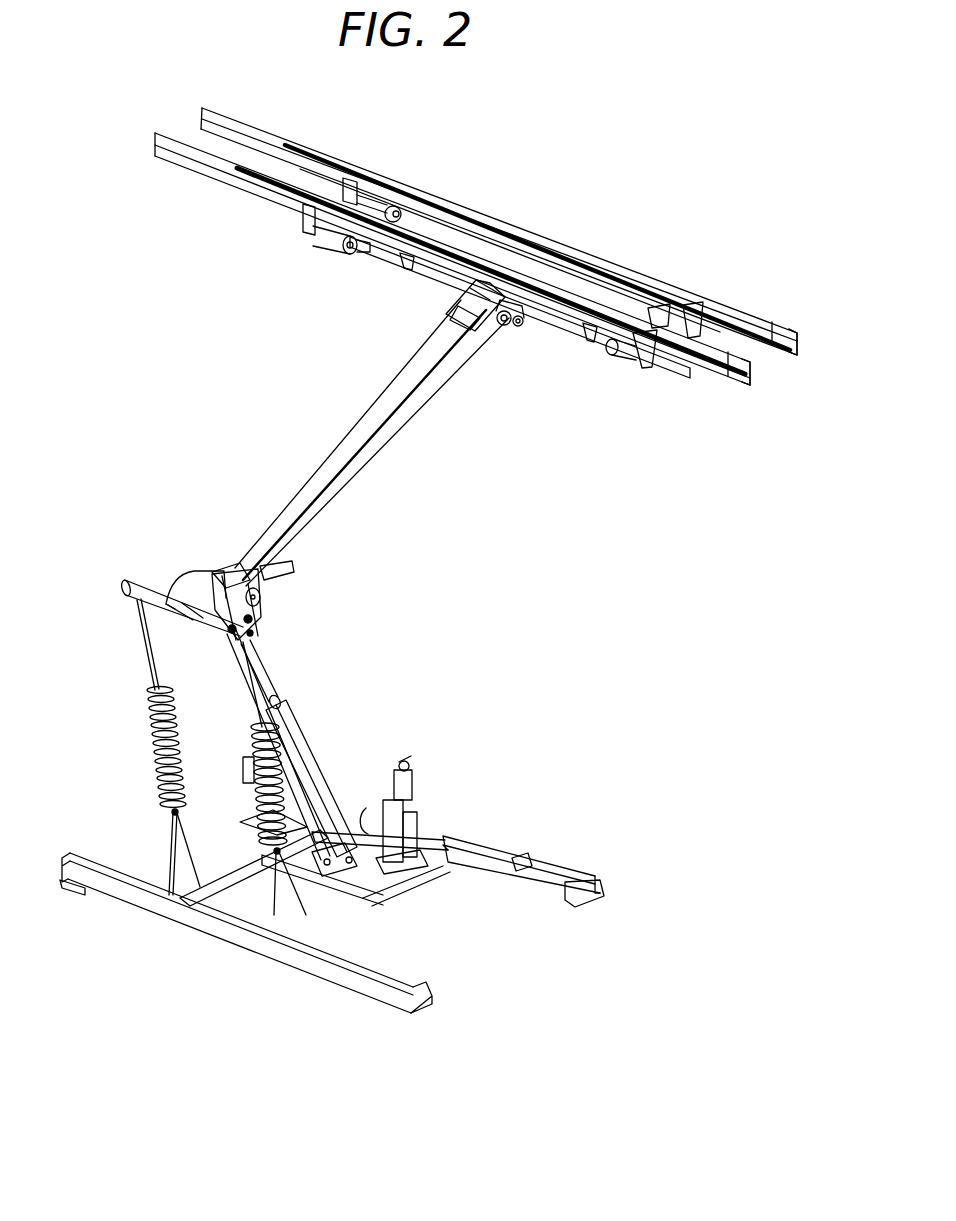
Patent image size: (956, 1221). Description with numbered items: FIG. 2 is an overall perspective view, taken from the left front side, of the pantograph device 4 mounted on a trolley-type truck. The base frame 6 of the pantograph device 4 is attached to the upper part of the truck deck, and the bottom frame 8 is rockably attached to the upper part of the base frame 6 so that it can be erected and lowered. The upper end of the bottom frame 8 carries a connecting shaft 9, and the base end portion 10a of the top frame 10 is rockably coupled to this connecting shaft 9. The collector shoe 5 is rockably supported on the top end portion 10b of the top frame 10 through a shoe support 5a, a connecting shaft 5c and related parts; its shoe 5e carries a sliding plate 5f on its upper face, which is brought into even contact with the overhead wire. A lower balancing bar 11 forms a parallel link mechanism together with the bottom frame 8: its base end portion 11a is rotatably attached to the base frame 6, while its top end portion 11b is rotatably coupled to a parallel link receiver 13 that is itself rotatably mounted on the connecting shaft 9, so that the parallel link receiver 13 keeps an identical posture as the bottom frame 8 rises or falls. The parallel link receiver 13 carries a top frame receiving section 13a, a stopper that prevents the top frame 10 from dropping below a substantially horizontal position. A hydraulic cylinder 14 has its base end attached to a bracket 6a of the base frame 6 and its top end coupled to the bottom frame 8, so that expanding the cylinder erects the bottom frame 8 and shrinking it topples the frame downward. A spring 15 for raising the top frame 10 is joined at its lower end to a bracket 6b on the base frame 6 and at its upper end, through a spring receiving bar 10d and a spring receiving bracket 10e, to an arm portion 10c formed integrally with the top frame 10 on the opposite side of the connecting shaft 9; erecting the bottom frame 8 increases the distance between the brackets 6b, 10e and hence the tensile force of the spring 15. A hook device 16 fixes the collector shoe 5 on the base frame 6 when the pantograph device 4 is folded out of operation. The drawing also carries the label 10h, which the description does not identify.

The pantograph device 4 is at (588, 549).
The collector shoe 5 is at (690, 364).
The shoe support 5a is at (330, 240).
The connecting shaft 5c is at (550, 312).
The shoe 5e is at (795, 353).
The sliding plate 5f is at (588, 258).
The base frame 6 is at (360, 980).
The bracket 6a is at (353, 873).
The bracket 6b is at (285, 893).
The bottom frame 8 is at (315, 731).
The connecting shaft 9 is at (258, 612).
The top frame 10 is at (363, 425).
The base end portion 10a is at (238, 572).
The top end portion 10b is at (463, 290).
The arm portion 10c is at (188, 578).
The spring receiving bar 10d is at (137, 591).
The spring receiving bracket 10e is at (128, 580).
The arm connecting eye 10h is at (508, 328).
The lower balancing bar 11 is at (318, 807).
The base end portion 11a is at (360, 878).
The top end portion 11b is at (230, 636).
The parallel link receiver 13 is at (263, 592).
The top frame receiving section 13a is at (272, 564).
The hydraulic cylinder 14 is at (305, 803).
The spring 15 is at (146, 739).
The hook device 16 is at (413, 782).